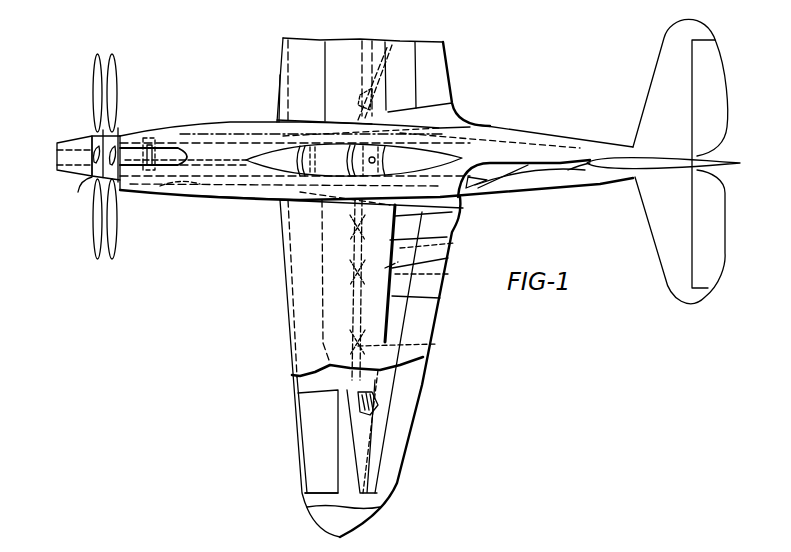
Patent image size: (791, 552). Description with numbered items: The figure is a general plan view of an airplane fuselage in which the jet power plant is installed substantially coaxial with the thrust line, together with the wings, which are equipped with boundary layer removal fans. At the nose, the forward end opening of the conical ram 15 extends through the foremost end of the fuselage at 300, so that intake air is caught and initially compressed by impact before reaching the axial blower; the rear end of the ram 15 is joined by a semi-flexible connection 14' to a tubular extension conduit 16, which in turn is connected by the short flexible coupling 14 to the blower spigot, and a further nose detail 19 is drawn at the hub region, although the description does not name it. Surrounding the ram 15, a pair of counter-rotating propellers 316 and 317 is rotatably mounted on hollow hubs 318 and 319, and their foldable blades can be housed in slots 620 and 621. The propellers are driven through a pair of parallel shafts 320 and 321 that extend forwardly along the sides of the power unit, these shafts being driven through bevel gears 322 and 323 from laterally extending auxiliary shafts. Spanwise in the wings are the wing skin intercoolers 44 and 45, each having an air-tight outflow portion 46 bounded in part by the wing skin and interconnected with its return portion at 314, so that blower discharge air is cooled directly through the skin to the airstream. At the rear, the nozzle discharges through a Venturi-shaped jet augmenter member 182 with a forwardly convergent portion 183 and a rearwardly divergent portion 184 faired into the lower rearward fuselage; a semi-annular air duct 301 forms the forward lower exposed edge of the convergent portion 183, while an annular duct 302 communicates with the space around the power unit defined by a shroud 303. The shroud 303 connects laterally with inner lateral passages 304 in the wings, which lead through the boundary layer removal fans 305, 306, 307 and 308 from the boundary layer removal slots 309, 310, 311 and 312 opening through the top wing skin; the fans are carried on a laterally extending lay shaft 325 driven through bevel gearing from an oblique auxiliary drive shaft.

The forward end opening of the ram 300 is at (57, 154).
The hub opening 19 is at (97, 142).
The conical ram 15 is at (130, 134).
The semi-flexible connection 14' is at (156, 137).
The tubular extension conduit 16 is at (178, 134).
The parallel shaft 321 is at (217, 134).
The outflow portion of the skin intercooler 46 is at (283, 76).
The wing skin intercooler 44 is at (318, 70).
The bevel gear 323 is at (358, 120).
The jet augmenter member 182 is at (580, 147).
The slot 620 is at (196, 157).
The flexible coupling 14 is at (354, 160).
The hollow hub 318 is at (75, 194).
The hollow hub 319 is at (118, 183).
The slot 621 is at (172, 193).
The parallel shaft 320 is at (230, 194).
The bevel gear 322 is at (290, 209).
The annular duct 302 is at (471, 190).
The air duct 301 is at (492, 193).
The forwardly convergent portion 183 is at (522, 178).
The rearwardly divergent portion 184 is at (568, 172).
The propeller 316 is at (92, 233).
The propeller 317 is at (116, 233).
The wing skin intercooler 45 is at (305, 253).
The shroud 303 is at (463, 221).
The boundary layer removal fan 308 is at (452, 244).
The boundary layer removal slot 312 is at (445, 259).
The inner lateral passage 304 is at (398, 262).
The boundary layer removal fan 307 is at (450, 274).
The boundary layer removal slot 311 is at (440, 300).
The boundary layer removal fan 306 is at (436, 344).
The boundary layer removal slot 310 is at (424, 360).
The lay shaft 325 is at (360, 392).
The boundary layer removal fan 305 is at (375, 412).
The boundary layer removal slot 309 is at (378, 438).
The interconnection of intercooler portions 314 is at (308, 495).